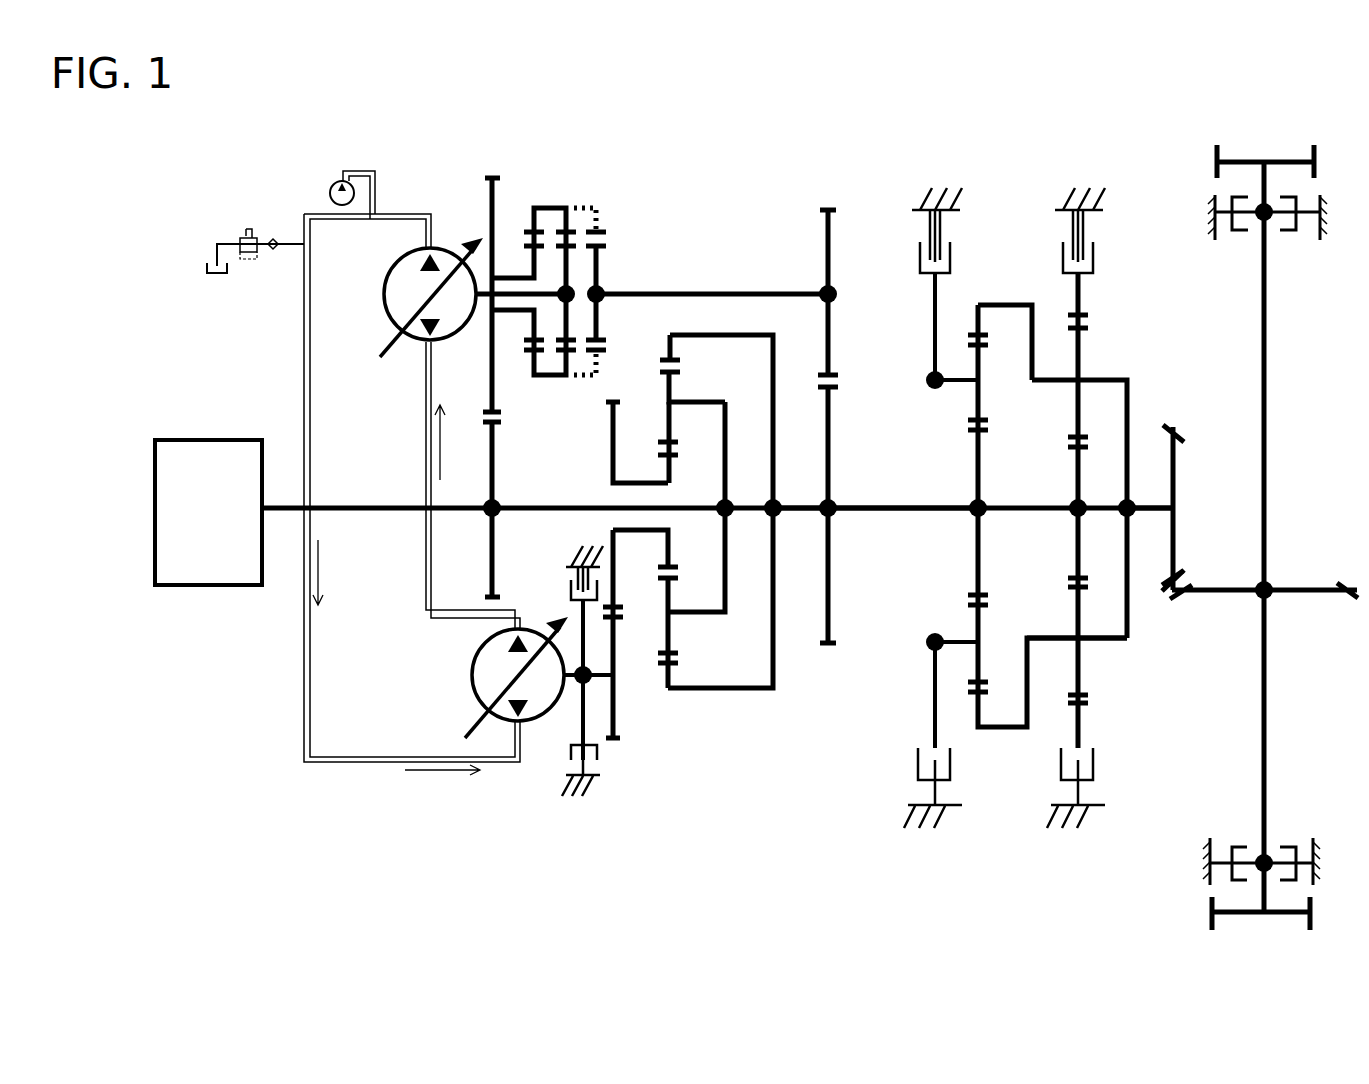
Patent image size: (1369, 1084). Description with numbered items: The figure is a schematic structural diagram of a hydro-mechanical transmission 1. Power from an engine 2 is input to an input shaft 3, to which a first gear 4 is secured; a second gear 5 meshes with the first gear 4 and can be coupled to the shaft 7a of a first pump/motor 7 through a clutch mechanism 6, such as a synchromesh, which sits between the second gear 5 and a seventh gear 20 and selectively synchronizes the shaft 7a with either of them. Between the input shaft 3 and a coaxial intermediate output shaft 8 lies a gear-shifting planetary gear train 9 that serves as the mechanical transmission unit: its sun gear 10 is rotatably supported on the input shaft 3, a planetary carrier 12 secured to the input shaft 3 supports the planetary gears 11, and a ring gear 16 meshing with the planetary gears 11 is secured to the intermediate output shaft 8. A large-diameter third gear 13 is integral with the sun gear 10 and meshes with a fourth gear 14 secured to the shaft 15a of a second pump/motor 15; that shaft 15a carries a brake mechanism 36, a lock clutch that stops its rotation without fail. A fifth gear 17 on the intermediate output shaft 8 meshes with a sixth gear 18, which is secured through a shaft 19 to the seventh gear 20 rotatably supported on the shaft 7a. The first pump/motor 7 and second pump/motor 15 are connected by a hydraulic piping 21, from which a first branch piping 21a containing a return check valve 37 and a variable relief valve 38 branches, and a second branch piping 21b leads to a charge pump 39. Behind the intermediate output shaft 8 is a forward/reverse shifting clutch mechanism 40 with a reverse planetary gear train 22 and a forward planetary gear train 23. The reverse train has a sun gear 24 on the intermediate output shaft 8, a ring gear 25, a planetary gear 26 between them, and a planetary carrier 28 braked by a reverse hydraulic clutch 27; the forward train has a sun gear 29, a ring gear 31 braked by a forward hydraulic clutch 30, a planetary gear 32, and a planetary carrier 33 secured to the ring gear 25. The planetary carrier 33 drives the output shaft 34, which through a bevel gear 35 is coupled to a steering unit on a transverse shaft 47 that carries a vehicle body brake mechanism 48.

The hydro-mechanical transmission 1 is at (900, 165).
The engine 2 is at (212, 440).
The input shaft 3 is at (358, 505).
The first gear 4 is at (495, 466).
The second gear 5 is at (495, 390).
The clutch mechanism 6 is at (598, 195).
The first pump/motor 7 is at (398, 264).
The shaft of the first pump/motor 7a is at (508, 293).
The intermediate output shaft 8 is at (858, 505).
The planetary gear train 9 is at (777, 703).
The sun gear 10 is at (672, 465).
The planetary gears 11 is at (672, 385).
The planetary carrier 12 is at (727, 470).
The third gear 13 is at (608, 440).
The fourth gear 14 is at (618, 720).
The second pump/motor 15 is at (537, 720).
The shaft of the second pump/motor 15a is at (595, 680).
The ring gear 16 is at (667, 355).
The fifth gear 17 is at (830, 605).
The sixth gear 18 is at (833, 235).
The shaft 19 is at (735, 293).
The seventh gear 20 is at (600, 262).
The hydraulic piping 21 is at (304, 685).
The first branch piping 21a is at (292, 248).
The second branch piping 21b is at (375, 200).
The reverse planetary gear train 22 is at (942, 465).
The forward planetary gear train 23 is at (1092, 420).
The sun gear 24 is at (982, 490).
The ring gear 25 is at (975, 320).
The planetary gear 26 is at (985, 395).
The reverse hydraulic clutch 27 is at (955, 255).
The planetary carrier 28 is at (932, 348).
The sun gear 29 is at (1075, 543).
The forward hydraulic clutch 30 is at (1095, 255).
The ring gear 31 is at (1085, 300).
The planetary gear 32 is at (1075, 395).
The planetary carrier 33 is at (1103, 640).
The output shaft 34 is at (1178, 512).
The bevel gear 35 is at (1178, 478).
The brake mechanism 36 is at (600, 752).
The return check valve 37 is at (272, 238).
The variable relief valve 38 is at (240, 236).
The charge pump 39 is at (333, 182).
The forward/reverse shifting clutch mechanism 40 is at (1006, 765).
The transverse shaft 47 is at (1268, 340).
The vehicle body brake mechanism 48 is at (1292, 235).